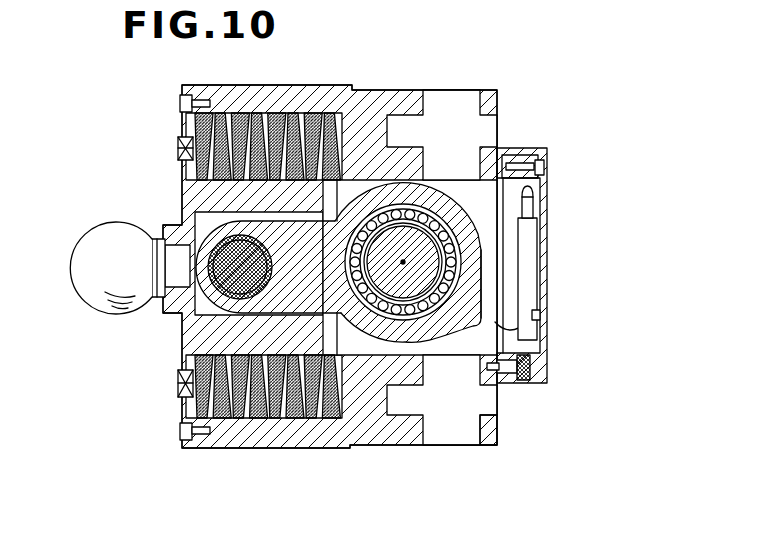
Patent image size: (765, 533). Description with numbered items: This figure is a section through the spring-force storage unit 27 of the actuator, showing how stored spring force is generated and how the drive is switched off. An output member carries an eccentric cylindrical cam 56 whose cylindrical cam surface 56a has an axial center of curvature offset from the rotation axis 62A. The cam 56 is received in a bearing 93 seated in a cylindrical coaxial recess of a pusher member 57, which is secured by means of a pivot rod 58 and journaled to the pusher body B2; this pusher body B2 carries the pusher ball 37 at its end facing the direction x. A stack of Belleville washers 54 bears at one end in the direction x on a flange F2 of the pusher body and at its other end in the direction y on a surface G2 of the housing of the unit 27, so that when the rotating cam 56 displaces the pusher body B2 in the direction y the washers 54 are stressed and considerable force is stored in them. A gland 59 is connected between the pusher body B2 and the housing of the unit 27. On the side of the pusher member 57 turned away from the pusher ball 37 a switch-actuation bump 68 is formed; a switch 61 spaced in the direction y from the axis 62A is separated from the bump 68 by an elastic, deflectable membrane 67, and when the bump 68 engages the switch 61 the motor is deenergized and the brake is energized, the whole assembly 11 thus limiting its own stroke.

The wheel alignment head assembly 11 is at (345, 270).
The spring-storage unit 27 is at (503, 430).
The pusher ball 37 is at (80, 266).
The Belleville washers 54 is at (270, 414).
The eccentric cylindrical cam 56 is at (444, 222).
The cylindrical cam surface 56a is at (482, 263).
The pusher member 57 is at (440, 198).
The pivot rod 58 is at (228, 262).
The gland 59 is at (184, 397).
The switch 61 is at (520, 335).
The rotation axis 62A is at (401, 264).
The membrane 67 is at (505, 213).
The switch-actuation bump 68 is at (505, 310).
The bearing 93 is at (386, 216).
The pusher body B2 is at (170, 357).
The spring force F2 is at (180, 167).
The gap G2 is at (345, 179).
The direction x is at (155, 347).
The direction y is at (605, 350).